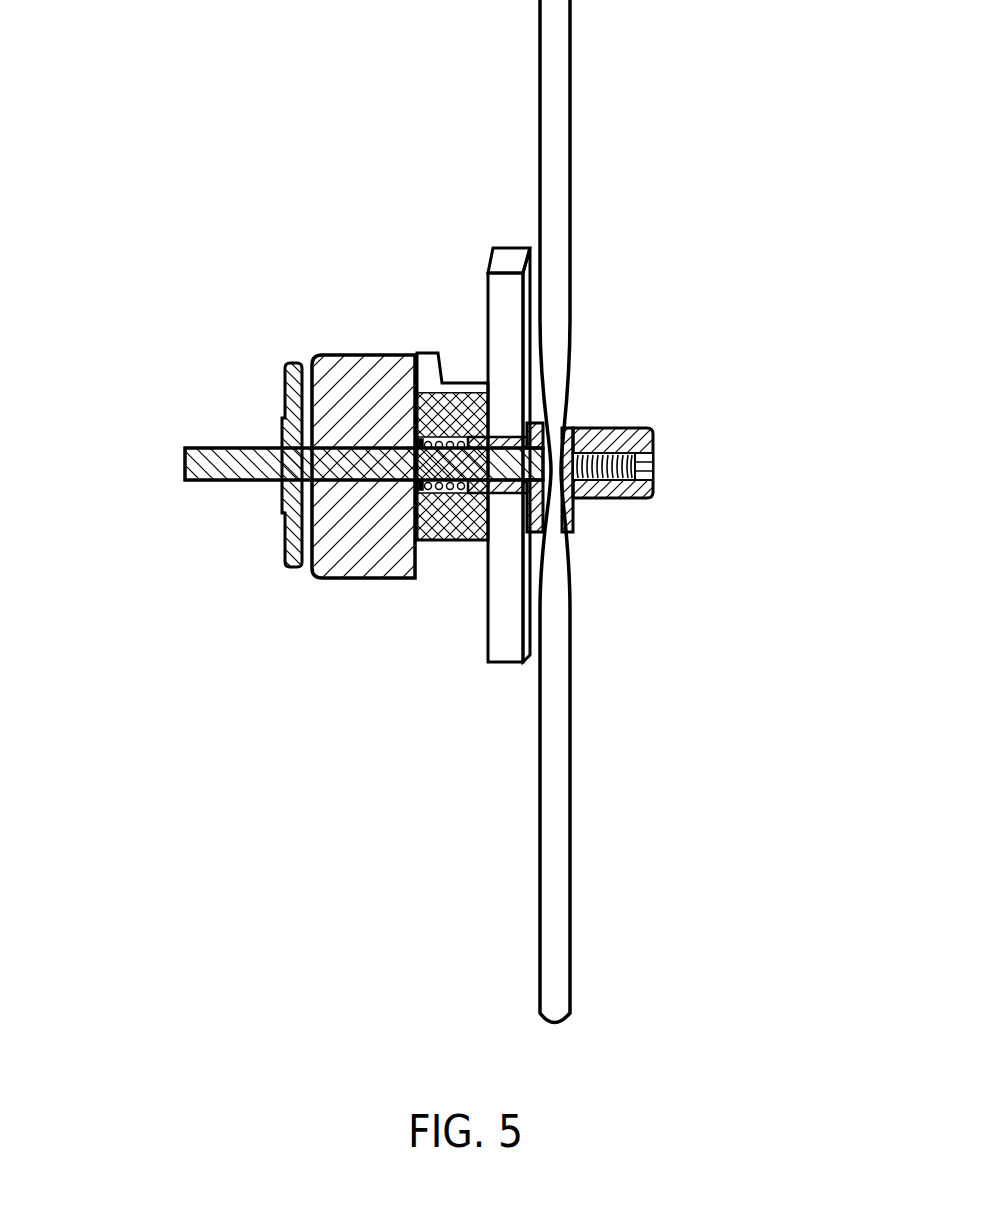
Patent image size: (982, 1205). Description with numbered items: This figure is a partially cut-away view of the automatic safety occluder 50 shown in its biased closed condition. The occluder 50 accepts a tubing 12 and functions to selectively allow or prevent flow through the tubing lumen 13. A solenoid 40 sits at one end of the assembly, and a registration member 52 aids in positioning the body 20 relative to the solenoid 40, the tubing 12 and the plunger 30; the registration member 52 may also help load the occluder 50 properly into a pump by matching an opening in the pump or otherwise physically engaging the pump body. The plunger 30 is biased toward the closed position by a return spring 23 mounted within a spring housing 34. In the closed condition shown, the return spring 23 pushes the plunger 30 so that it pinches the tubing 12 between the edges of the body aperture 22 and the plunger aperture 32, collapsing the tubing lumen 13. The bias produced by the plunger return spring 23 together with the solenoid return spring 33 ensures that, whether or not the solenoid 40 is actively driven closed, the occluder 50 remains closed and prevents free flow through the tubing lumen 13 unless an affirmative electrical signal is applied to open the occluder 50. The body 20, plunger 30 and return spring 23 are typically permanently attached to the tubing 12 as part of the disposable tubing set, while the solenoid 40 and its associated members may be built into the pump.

The tubing 12 is at (553, 832).
The tubing lumen 13 is at (558, 410).
The body 20 is at (653, 438).
The body aperture 22 is at (589, 417).
The return spring 23 is at (633, 496).
The plunger 30 is at (612, 428).
The plunger aperture 32 is at (522, 488).
The solenoid return spring 33 is at (468, 422).
The spring housing 34 is at (435, 405).
The solenoid 40 is at (325, 576).
The occluder 50 is at (222, 234).
The registration member 52 is at (515, 260).